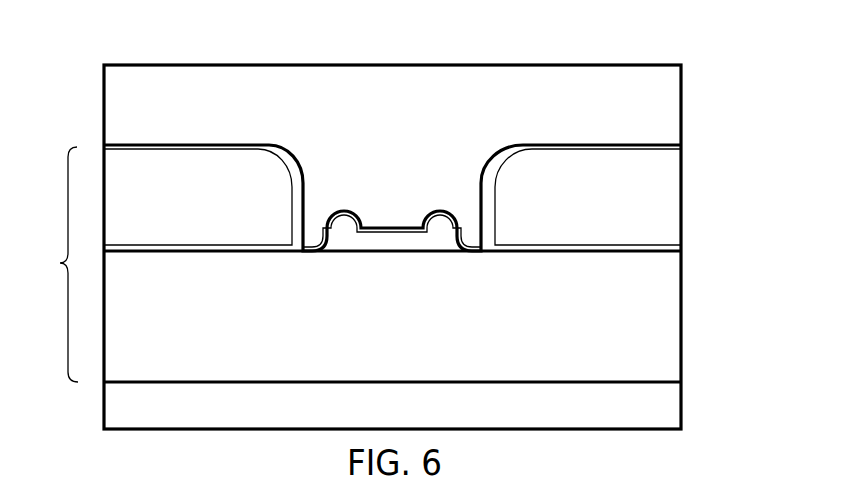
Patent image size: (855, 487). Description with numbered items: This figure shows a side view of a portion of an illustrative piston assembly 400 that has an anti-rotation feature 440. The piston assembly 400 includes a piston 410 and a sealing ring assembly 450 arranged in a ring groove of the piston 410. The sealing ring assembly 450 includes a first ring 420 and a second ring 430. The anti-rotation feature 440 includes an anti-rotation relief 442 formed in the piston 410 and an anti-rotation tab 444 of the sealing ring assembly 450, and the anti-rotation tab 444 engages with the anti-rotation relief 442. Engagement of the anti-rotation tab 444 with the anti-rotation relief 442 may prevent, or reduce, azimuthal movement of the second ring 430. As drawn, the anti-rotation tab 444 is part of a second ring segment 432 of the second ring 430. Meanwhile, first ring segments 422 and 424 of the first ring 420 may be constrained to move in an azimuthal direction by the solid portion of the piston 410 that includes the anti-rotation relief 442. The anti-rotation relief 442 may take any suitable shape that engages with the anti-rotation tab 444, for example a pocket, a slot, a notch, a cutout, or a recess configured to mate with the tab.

The piston assembly 400 is at (625, 50).
The piston 410 is at (582, 115).
The first ring 420 is at (697, 198).
The first ring segment 422 is at (180, 206).
The first ring segment 424 is at (571, 202).
The second ring 430 is at (697, 304).
The second ring segment 432 is at (473, 342).
The anti-rotation feature 440 is at (310, 245).
The anti-rotation relief 442 is at (330, 210).
The anti-rotation tab 444 is at (365, 240).
The sealing ring assembly 450 is at (47, 264).